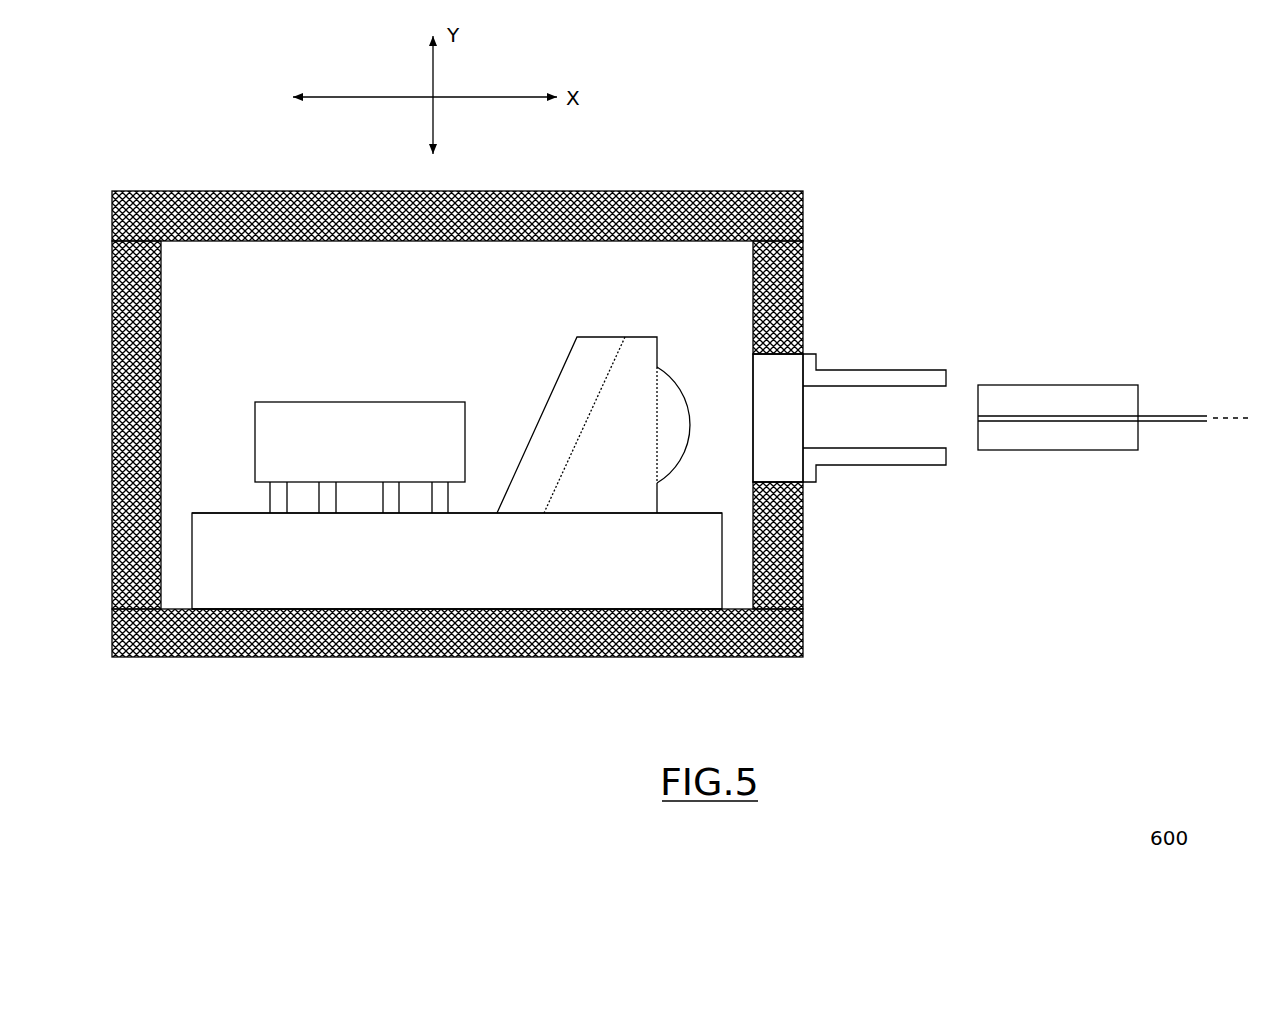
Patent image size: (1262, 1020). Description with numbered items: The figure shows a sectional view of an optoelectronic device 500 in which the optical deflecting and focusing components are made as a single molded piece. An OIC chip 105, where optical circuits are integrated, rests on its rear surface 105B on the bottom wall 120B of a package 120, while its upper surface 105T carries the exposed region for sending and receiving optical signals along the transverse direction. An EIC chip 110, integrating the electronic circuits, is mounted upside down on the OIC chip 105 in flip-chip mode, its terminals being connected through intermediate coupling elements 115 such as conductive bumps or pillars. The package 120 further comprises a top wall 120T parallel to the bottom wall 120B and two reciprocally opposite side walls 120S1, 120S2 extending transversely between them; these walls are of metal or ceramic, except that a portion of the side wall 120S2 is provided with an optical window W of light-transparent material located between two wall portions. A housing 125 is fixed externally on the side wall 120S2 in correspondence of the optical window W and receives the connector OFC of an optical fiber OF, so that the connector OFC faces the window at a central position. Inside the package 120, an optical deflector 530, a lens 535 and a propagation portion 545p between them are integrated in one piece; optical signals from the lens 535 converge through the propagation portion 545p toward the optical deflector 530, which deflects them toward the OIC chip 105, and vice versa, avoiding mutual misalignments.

The optoelectronic device 500 is at (1082, 115).
The package 120 is at (803, 309).
The top wall 120T is at (803, 210).
The bottom wall 120B is at (803, 647).
The side wall 120S1 is at (161, 355).
The side wall 120S2 is at (803, 580).
The housing 125 is at (877, 370).
The optical window W is at (783, 433).
The OIC chip 105 is at (487, 571).
The rear surface 105B is at (285, 607).
The upper surface 105T is at (594, 515).
The EIC chip 110 is at (300, 401).
The coupling elements 115 is at (268, 507).
The optical deflector 530 is at (578, 385).
The propagation portion 545p is at (638, 362).
The lens 535 is at (683, 395).
The connector OFC is at (1030, 385).
The optical fiber OF is at (1183, 420).